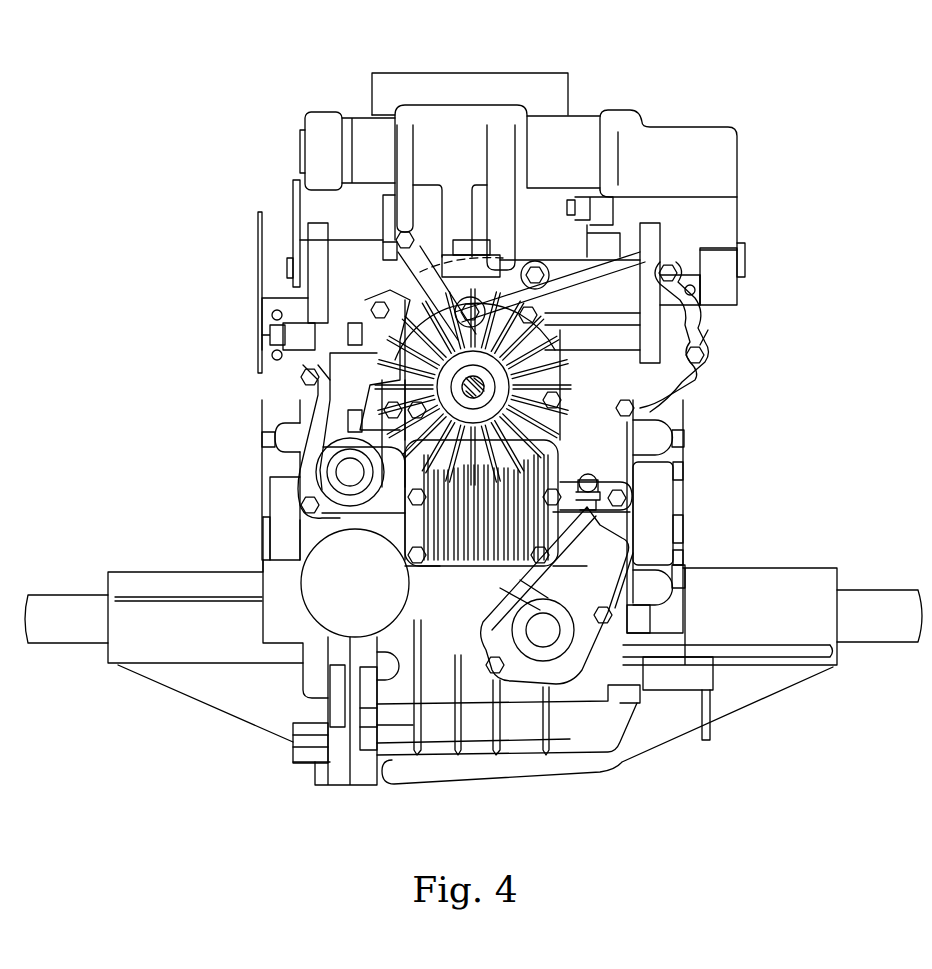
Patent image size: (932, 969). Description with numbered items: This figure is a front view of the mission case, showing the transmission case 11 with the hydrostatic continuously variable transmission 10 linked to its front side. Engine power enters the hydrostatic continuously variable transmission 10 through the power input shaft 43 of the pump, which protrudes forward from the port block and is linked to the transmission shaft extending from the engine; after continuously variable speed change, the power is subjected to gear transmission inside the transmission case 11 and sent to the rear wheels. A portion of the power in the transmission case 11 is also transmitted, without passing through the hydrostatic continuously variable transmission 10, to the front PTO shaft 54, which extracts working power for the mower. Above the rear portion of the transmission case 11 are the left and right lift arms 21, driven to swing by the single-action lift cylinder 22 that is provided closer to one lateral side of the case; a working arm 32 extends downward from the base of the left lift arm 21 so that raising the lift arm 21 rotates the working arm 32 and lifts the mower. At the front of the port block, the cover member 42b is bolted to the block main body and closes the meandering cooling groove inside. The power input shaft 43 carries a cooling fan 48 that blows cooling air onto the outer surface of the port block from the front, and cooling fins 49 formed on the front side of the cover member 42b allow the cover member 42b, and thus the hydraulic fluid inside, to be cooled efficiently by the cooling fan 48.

The hydrostatic continuously variable transmission 10 is at (405, 462).
The transmission case 11 is at (573, 733).
The lift arm 21 is at (320, 112).
The lift cylinder 22 is at (453, 115).
The working arm 32 is at (752, 264).
The cover member 42b is at (595, 527).
The power input shaft 43 is at (360, 375).
The cooling fan 48 is at (677, 390).
The cooling fins 49 is at (430, 543).
The front PTO shaft 54 is at (547, 618).